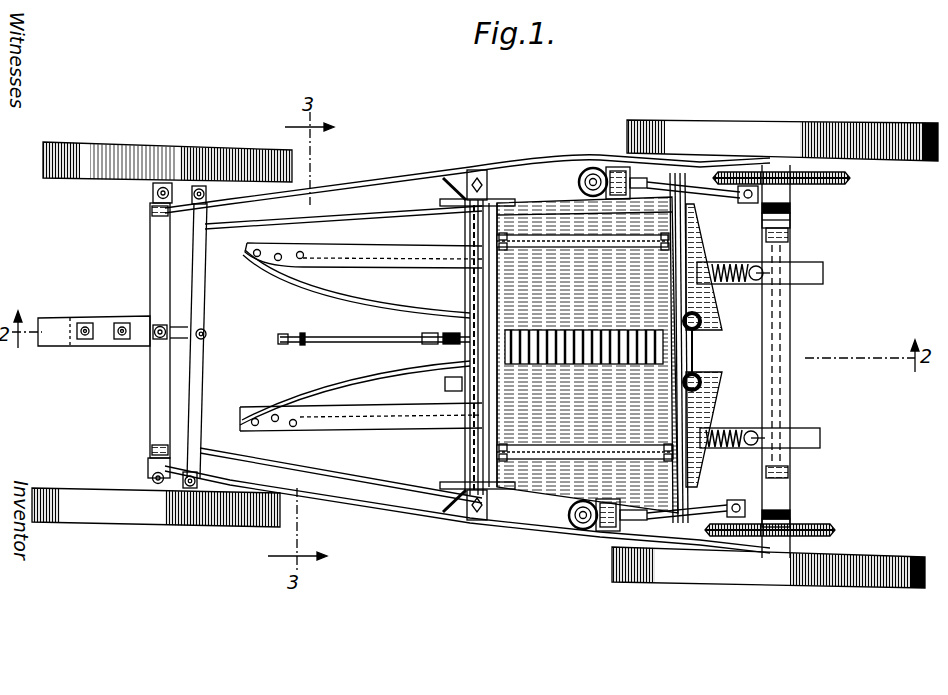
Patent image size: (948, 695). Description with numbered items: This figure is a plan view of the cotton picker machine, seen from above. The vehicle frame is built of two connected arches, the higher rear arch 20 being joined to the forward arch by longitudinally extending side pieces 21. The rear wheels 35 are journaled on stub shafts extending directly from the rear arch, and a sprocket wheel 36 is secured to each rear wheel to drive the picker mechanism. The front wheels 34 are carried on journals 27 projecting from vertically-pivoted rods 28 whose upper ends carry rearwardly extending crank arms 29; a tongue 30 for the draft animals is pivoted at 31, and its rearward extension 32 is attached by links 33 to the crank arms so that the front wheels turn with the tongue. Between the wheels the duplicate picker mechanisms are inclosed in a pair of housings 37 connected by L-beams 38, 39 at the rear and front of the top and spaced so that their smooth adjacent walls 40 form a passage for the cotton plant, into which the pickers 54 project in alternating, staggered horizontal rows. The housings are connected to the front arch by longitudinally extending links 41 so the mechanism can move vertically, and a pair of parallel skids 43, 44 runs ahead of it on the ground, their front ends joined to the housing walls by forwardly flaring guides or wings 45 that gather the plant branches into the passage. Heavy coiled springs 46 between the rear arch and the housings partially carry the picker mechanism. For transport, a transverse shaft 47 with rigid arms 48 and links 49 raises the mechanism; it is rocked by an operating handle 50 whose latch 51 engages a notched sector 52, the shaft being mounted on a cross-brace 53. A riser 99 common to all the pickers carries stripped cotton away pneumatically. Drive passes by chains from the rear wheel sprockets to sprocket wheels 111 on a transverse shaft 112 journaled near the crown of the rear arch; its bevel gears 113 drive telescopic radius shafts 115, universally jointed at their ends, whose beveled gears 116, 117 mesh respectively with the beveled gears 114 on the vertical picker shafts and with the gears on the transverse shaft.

The rear arch 20 is at (791, 408).
The side pieces 21 is at (364, 184).
The front wheel journals 27 is at (156, 187).
The vertically-pivoted rods 28 is at (153, 200).
The crank arms 29 is at (201, 191).
The tongue 30 is at (58, 318).
The tongue pivot 31 is at (156, 340).
The rearward extension 32 is at (207, 326).
The links 33 is at (208, 272).
The front wheels 34 is at (118, 143).
The rear wheels 35 is at (714, 121).
The sprocket wheel 36 is at (851, 180).
The housings 37 is at (718, 318).
The rear L-beam 38 is at (700, 293).
The front L-beam 39 is at (508, 295).
The adjacent walls 40 is at (703, 324).
The upper links 41 is at (366, 215).
The skid 43 is at (400, 246).
The skid 44 is at (383, 431).
The guides or wings 45 is at (350, 304).
The coiled springs 46 is at (738, 262).
The transverse shaft 47 is at (464, 398).
The rigid arms 48 is at (456, 206).
The links 49 is at (452, 186).
The operating handle 50 is at (284, 344).
The latch 51 is at (322, 336).
The notched sector 52 is at (440, 333).
The cross-brace 53 is at (444, 385).
The pickers 54 is at (570, 330).
The riser 99 is at (694, 374).
The sprocket wheels 111 is at (792, 201).
The transverse shaft 112 is at (791, 334).
The bevel gears 113 is at (792, 212).
The beveled gears 114 is at (592, 167).
The telescopic radius shafts 115 is at (702, 197).
The beveled gear 116 is at (614, 165).
The beveled gear 117 is at (792, 204).